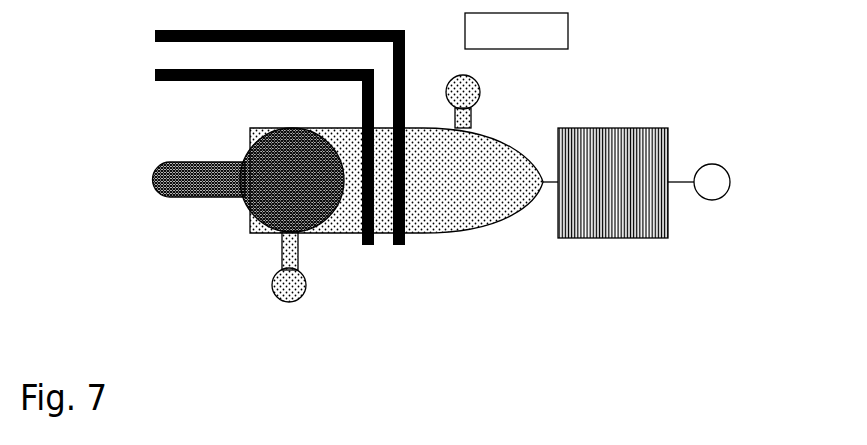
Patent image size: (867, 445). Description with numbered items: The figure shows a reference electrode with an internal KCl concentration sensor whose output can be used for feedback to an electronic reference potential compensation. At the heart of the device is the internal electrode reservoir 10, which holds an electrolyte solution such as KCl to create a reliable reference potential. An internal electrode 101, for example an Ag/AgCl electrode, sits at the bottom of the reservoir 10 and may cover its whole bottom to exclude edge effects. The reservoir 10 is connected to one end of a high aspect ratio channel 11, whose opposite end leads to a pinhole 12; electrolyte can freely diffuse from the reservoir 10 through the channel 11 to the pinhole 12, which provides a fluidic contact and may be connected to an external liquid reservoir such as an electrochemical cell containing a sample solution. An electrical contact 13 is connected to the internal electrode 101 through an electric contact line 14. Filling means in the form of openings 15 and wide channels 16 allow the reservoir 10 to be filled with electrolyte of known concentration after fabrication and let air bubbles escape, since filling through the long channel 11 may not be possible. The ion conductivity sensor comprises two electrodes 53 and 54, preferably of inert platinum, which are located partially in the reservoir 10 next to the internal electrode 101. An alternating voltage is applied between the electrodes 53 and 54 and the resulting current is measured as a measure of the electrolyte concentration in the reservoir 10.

The internal electrode reservoir 10 is at (404, 180).
The high aspect ratio channel 11 is at (632, 142).
The pinhole 12 is at (718, 176).
The electrical contact 13 is at (168, 182).
The electric contact line 14 is at (216, 187).
The opening 15 is at (292, 290).
The wide channel 16 is at (280, 252).
The ion conductivity sensor electrode 53 is at (168, 82).
The ion conductivity sensor electrode 54 is at (165, 32).
The internal electrode 101 is at (313, 198).